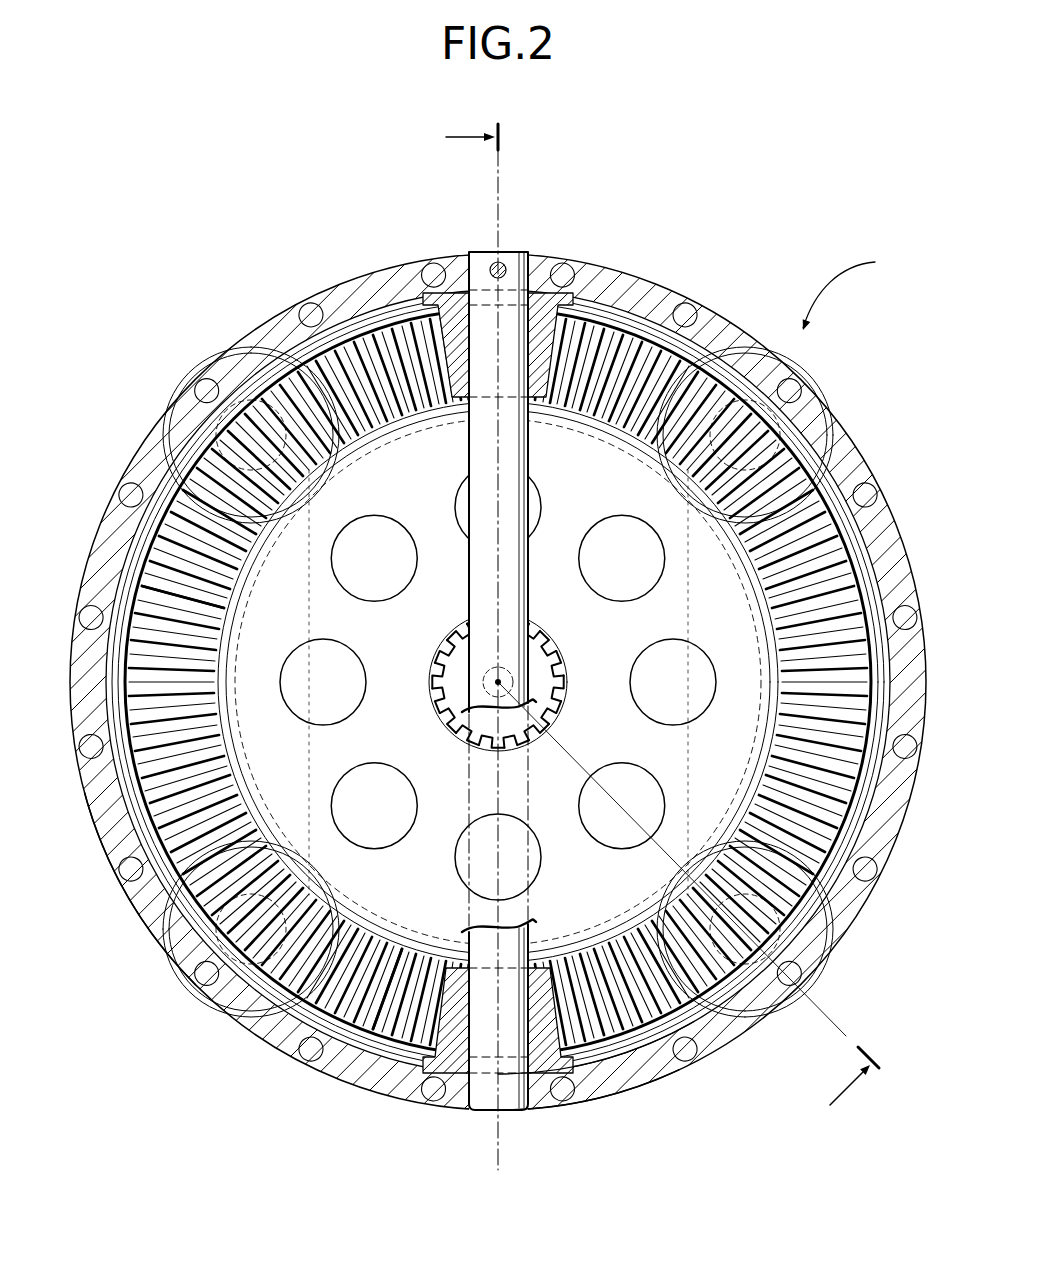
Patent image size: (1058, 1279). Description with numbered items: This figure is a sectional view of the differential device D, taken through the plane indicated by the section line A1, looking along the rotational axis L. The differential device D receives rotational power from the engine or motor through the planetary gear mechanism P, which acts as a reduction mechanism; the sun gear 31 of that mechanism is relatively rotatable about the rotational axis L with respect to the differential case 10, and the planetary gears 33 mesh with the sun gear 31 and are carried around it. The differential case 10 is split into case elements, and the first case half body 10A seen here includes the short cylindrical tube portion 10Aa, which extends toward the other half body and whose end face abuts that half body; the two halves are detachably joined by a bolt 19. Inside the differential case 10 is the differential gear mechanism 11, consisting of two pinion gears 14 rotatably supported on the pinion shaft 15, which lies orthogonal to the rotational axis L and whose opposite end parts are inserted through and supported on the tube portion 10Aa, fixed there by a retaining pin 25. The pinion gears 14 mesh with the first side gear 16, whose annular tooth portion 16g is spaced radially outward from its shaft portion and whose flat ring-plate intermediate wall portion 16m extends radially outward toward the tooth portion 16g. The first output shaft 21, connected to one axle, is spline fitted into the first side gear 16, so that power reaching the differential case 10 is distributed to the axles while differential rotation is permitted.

The differential case 10 is at (262, 310).
The first case half body 10A is at (125, 905).
The tube portion 10Aa is at (594, 1070).
The differential gear mechanism 11 is at (598, 1068).
The pinion gear 14 is at (440, 350).
The pinion shaft 15 is at (515, 376).
The first side gear 16 is at (625, 322).
The intermediate wall portion 16m is at (270, 617).
The tooth portion 16g is at (388, 1022).
The bolt 19 is at (877, 876).
The first output shaft 21 is at (447, 650).
The retaining pin 25 is at (505, 262).
The sun gear 31 is at (404, 428).
The planetary gear 33 is at (823, 388).
The planetary gear mechanism P is at (168, 383).
The differential device D is at (852, 289).
The rotational axis L is at (500, 683).
The section line A1 is at (632, 631).